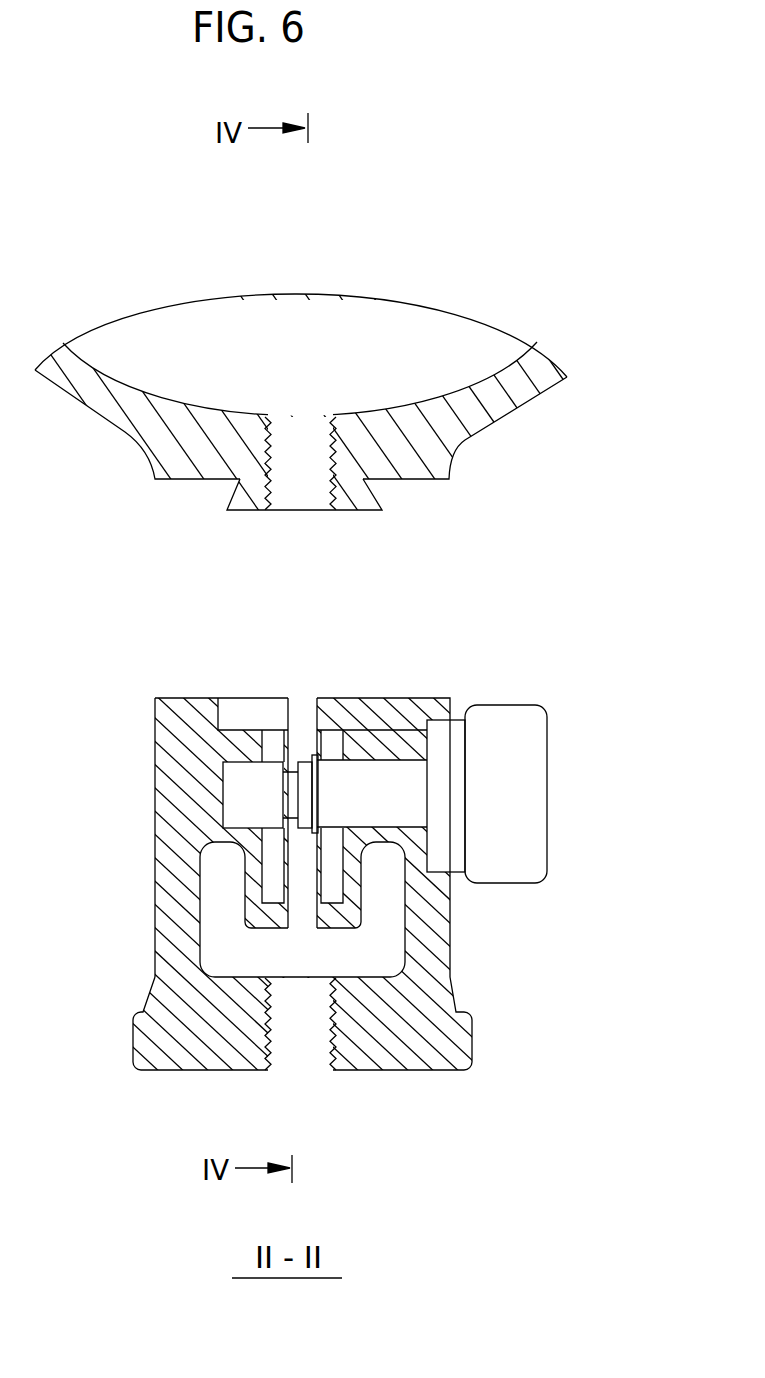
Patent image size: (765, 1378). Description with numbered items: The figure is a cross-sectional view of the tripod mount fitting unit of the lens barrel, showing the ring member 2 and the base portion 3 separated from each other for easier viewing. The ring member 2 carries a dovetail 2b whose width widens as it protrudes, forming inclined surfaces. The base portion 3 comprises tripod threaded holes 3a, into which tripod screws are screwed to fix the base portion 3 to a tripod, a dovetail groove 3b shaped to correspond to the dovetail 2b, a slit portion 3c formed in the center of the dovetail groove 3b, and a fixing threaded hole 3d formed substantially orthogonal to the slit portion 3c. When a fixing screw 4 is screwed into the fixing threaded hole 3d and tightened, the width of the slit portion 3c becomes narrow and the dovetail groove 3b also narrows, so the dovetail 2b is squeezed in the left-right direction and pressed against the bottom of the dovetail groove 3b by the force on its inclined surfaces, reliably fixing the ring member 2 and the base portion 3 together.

The ring member 2 is at (520, 407).
The dovetail 2b is at (247, 498).
The base portion 3 is at (435, 1048).
The tripod threaded holes 3a is at (336, 1056).
The dovetail groove 3b is at (245, 722).
The slit portion 3c is at (305, 727).
The fixing threaded hole 3d is at (212, 741).
The fixing screw 4 is at (515, 758).